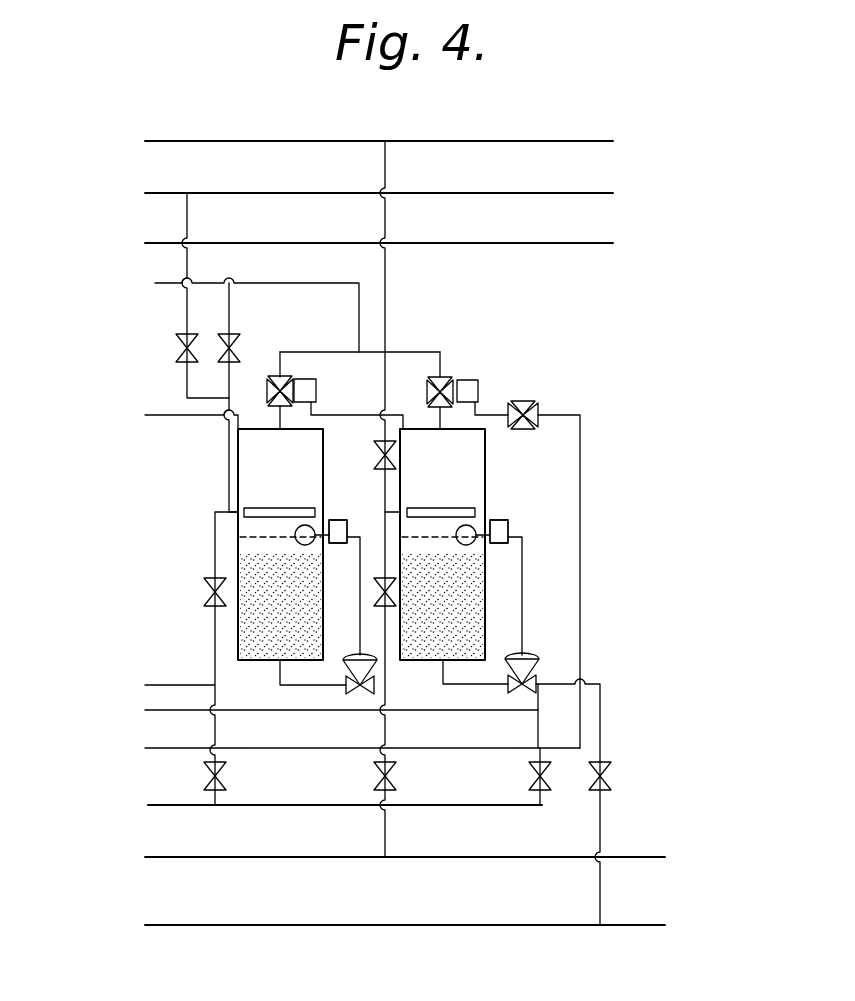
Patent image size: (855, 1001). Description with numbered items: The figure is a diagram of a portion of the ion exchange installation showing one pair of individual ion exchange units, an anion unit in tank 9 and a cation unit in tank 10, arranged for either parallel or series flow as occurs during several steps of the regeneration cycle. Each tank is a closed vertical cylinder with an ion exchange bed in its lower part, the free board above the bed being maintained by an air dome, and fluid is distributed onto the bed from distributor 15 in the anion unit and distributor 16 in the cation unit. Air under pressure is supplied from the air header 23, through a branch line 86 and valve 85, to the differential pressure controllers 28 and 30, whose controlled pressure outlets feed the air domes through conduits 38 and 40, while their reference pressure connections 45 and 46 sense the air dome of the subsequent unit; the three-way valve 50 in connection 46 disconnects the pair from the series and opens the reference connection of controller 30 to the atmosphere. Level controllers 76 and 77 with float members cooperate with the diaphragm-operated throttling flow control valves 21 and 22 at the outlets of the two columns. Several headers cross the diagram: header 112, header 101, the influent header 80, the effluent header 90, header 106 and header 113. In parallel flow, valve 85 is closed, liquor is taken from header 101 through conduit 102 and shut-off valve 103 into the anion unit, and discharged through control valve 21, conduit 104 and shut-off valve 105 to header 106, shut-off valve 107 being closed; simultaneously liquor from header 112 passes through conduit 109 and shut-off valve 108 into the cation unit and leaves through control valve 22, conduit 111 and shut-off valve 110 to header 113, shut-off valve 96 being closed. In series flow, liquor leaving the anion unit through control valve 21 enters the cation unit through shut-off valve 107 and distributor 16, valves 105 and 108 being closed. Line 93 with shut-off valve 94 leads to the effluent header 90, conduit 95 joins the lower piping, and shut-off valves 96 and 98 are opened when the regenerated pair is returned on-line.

The header 112 is at (578, 133).
The header 101 is at (575, 193).
The influent header 80 is at (585, 243).
The air header 23 is at (158, 283).
The conduit 109 is at (387, 316).
The conduit 102 is at (184, 316).
The shut-off valve 103 is at (176, 350).
The air conduit 86 is at (229, 300).
The valve 85 is at (241, 350).
The conduit connection 45 is at (354, 418).
The differential pressure controller 28 is at (316, 388).
The conduit 38 is at (280, 415).
The shut-off valve 108 is at (374, 458).
The differential pressure controller 30 is at (478, 390).
The conduit 40 is at (440, 415).
The conduit connection 46 is at (497, 418).
The three-way valve 50 is at (527, 408).
The tank 9 is at (323, 468).
The distributor device 15 is at (276, 509).
The level controller 76 is at (333, 520).
The shut-off valve 98 is at (205, 593).
The shut-off valve 107 is at (374, 594).
The flow control valve 21 is at (356, 657).
The tank 10 is at (485, 470).
The distributor device 16 is at (444, 509).
The level controller 77 is at (500, 520).
The flow control valve 22 is at (528, 658).
The line 93 is at (215, 726).
The conduit 104 is at (385, 726).
The conduit 95 is at (538, 724).
The conduit 111 is at (582, 722).
The shut-off valve 94 is at (225, 775).
The shut-off valve 105 is at (396, 775).
The shut-off valve 96 is at (530, 776).
The shut-off valve 110 is at (611, 775).
The effluent header 90 is at (186, 806).
The header 106 is at (258, 852).
The header 113 is at (386, 926).